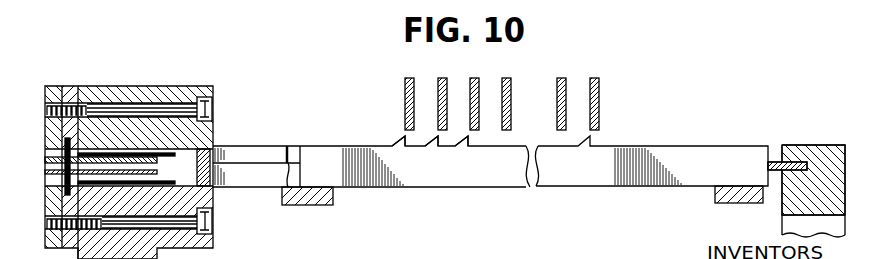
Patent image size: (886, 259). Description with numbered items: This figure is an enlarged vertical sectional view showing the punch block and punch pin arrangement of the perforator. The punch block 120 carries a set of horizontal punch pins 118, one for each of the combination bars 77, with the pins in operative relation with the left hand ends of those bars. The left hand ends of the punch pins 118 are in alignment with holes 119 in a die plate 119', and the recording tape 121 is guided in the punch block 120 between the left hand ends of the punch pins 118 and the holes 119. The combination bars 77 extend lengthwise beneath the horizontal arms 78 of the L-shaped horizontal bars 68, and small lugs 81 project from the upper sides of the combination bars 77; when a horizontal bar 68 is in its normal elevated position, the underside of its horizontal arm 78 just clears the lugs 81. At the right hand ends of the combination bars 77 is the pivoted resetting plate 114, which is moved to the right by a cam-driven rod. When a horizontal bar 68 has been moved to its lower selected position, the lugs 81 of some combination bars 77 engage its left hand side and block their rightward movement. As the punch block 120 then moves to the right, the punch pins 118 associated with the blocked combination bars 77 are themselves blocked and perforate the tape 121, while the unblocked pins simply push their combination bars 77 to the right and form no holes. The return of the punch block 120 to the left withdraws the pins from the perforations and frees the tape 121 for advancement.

The horizontal bar 68 is at (507, 77).
The combination bar 77 is at (477, 178).
The horizontal arm 78 is at (438, 100).
The lug 81 is at (470, 146).
The resetting plate 114 is at (788, 226).
The punch pin 118 is at (171, 148).
The hole 119 is at (82, 167).
The die plate 119' is at (31, 131).
The punch block 120 is at (230, 95).
The recording tape 121 is at (53, 185).